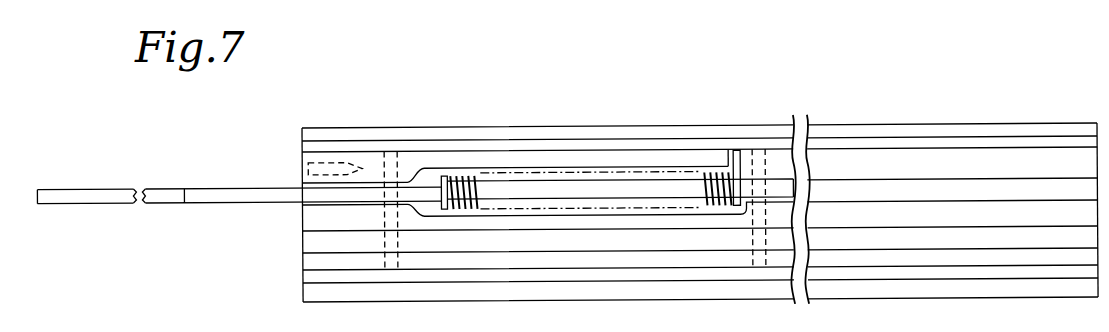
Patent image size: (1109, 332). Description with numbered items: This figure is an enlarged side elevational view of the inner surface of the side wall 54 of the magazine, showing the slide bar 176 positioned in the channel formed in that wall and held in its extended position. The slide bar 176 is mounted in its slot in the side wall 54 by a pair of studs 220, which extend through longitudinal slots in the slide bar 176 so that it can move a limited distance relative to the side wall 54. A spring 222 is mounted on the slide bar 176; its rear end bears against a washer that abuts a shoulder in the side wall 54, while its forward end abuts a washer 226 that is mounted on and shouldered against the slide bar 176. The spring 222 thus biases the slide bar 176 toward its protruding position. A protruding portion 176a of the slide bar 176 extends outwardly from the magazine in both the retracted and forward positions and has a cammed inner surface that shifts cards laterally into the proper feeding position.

The side wall 54 is at (908, 126).
The slide bar 176 is at (262, 167).
The protruding portion 176a is at (117, 161).
The studs 220 is at (400, 172).
The spring 222 is at (704, 191).
The washer 226 is at (443, 178).